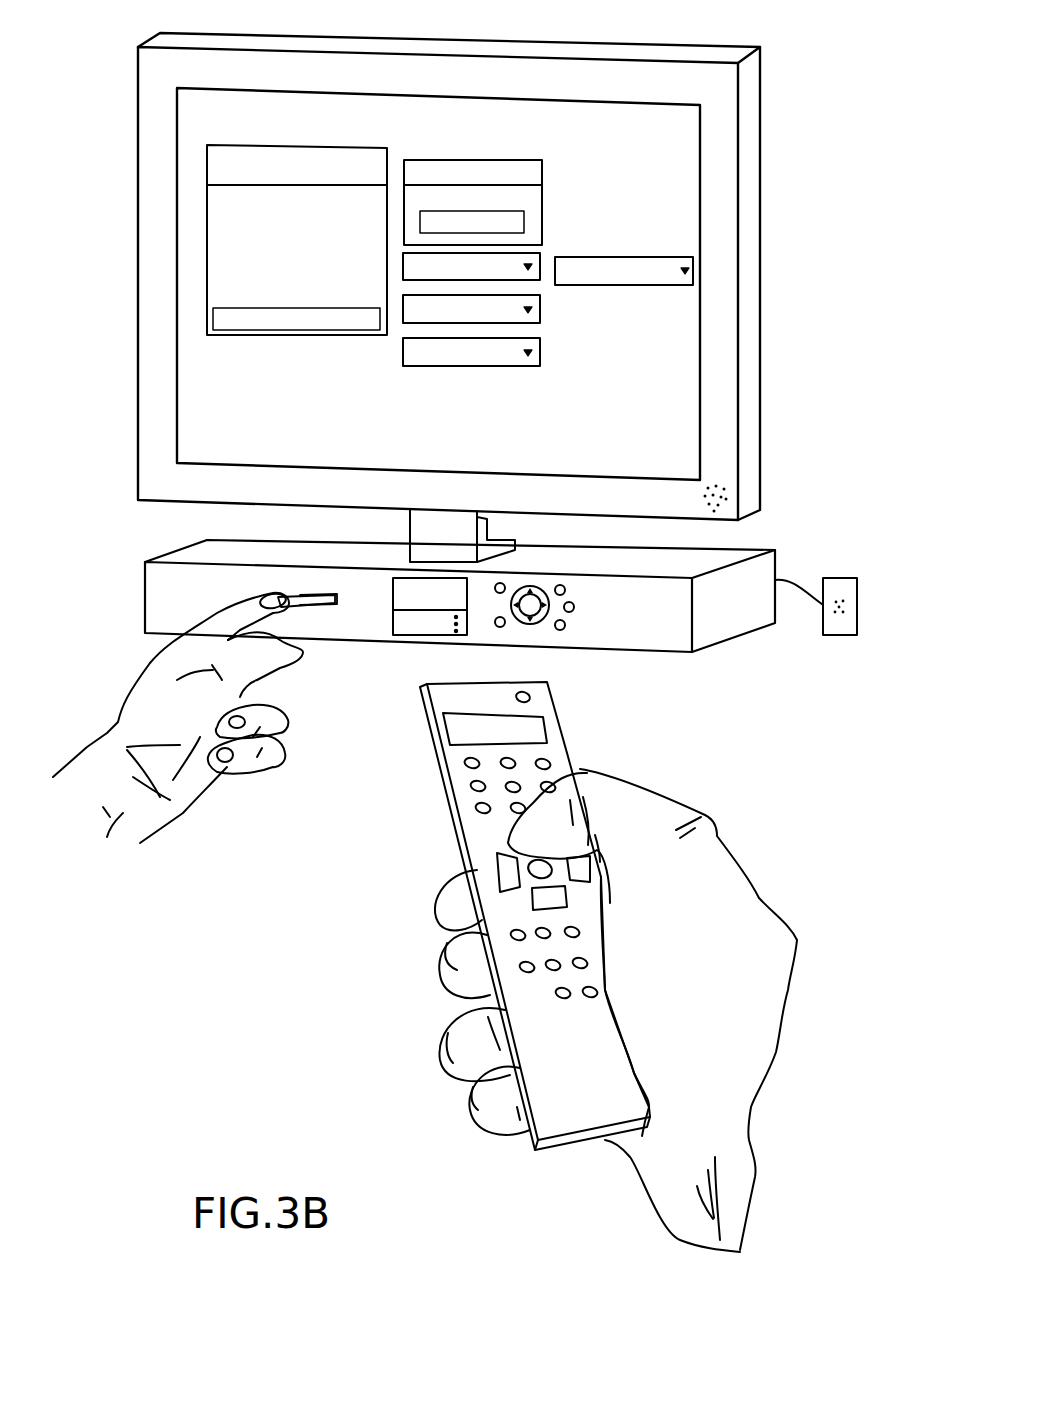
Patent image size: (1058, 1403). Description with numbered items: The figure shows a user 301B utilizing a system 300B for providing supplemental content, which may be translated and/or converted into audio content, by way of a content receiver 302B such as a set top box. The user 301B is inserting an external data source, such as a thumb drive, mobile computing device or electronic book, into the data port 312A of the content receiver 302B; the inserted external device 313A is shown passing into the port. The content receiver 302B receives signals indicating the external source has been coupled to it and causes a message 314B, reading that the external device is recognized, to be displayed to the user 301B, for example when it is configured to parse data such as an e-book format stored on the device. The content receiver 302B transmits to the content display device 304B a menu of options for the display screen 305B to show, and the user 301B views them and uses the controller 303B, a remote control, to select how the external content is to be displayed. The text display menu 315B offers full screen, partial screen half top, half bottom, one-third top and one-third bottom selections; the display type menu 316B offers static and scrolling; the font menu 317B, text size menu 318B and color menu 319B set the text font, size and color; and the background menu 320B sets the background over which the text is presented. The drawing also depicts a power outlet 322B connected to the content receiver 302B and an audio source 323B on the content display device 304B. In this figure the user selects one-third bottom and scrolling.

The system 300B is at (222, 1035).
The user 301B is at (120, 723).
The content receiver 302B is at (152, 550).
The controller 303B is at (556, 720).
The content display device 304B is at (138, 108).
The display screen 305B is at (226, 240).
The data port 312A is at (338, 594).
The memory card 313A is at (322, 604).
The message 314B is at (277, 125).
The text display menu 315B is at (207, 172).
The display type menu 316B is at (542, 178).
The font menu 317B is at (541, 262).
The text size menu 318B is at (540, 310).
The color menu 319B is at (510, 366).
The background menu 320B is at (685, 286).
The power outlet 322B is at (820, 628).
The sensor 323B is at (730, 502).